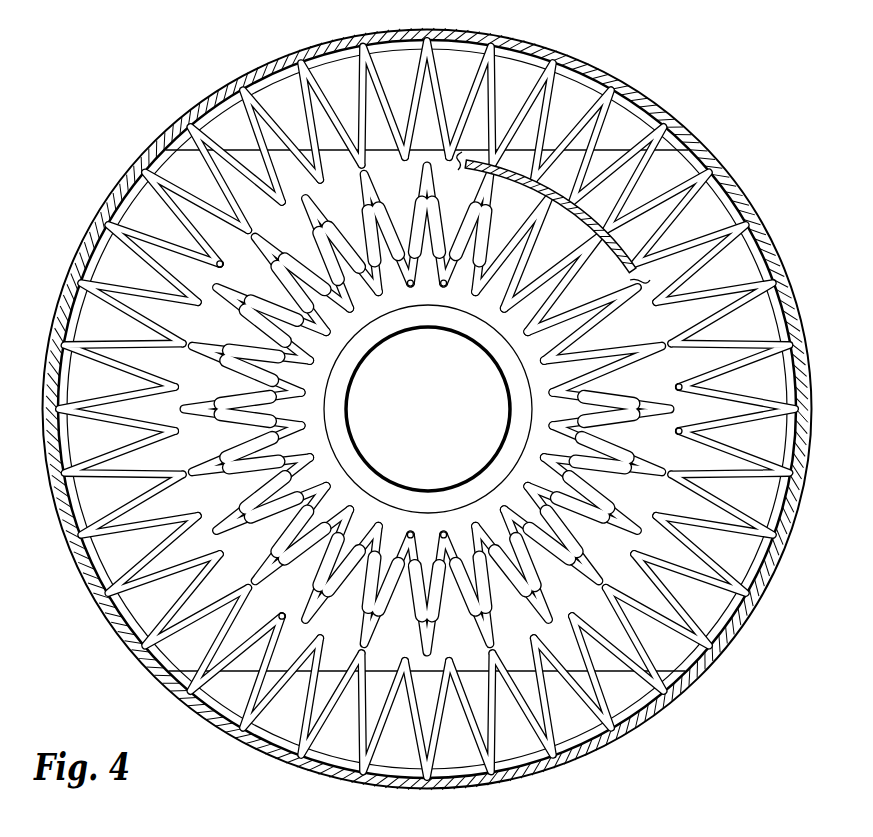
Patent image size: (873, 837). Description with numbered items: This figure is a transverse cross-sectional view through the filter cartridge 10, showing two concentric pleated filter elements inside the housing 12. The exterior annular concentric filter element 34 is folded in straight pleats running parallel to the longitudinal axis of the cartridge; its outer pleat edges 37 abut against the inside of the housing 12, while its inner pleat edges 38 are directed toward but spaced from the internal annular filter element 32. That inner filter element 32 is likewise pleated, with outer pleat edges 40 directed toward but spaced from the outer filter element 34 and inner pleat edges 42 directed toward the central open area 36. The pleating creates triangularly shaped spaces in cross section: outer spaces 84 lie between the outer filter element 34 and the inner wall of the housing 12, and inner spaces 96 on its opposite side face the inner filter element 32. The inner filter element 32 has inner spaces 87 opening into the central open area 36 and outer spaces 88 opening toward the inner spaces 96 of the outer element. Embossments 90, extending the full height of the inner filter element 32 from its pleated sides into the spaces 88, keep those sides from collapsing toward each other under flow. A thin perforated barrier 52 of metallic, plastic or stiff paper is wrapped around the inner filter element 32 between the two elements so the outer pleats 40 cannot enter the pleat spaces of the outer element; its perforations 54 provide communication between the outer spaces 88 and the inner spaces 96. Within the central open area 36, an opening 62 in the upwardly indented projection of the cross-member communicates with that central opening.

The filter cartridge 10 is at (690, 105).
The housing 12 is at (596, 68).
The internal annular filter element 32 is at (508, 409).
The exterior annular concentric filter element 34 is at (180, 215).
The central open area 36 is at (446, 428).
The outer pleat edges 37 is at (236, 112).
The inner pleat edges 38 is at (222, 265).
The outer pleat edges 40 is at (181, 412).
The inner pleat edges 42 is at (523, 490).
The perforated barrier 52 is at (502, 82).
The perforations 54 is at (695, 198).
The opening 62 is at (348, 423).
The outer spaces 84 is at (287, 105).
The inner spaces 87 is at (523, 310).
The outer spaces 88 is at (376, 192).
The embossments 90 is at (238, 345).
The inner spaces 96 is at (163, 400).